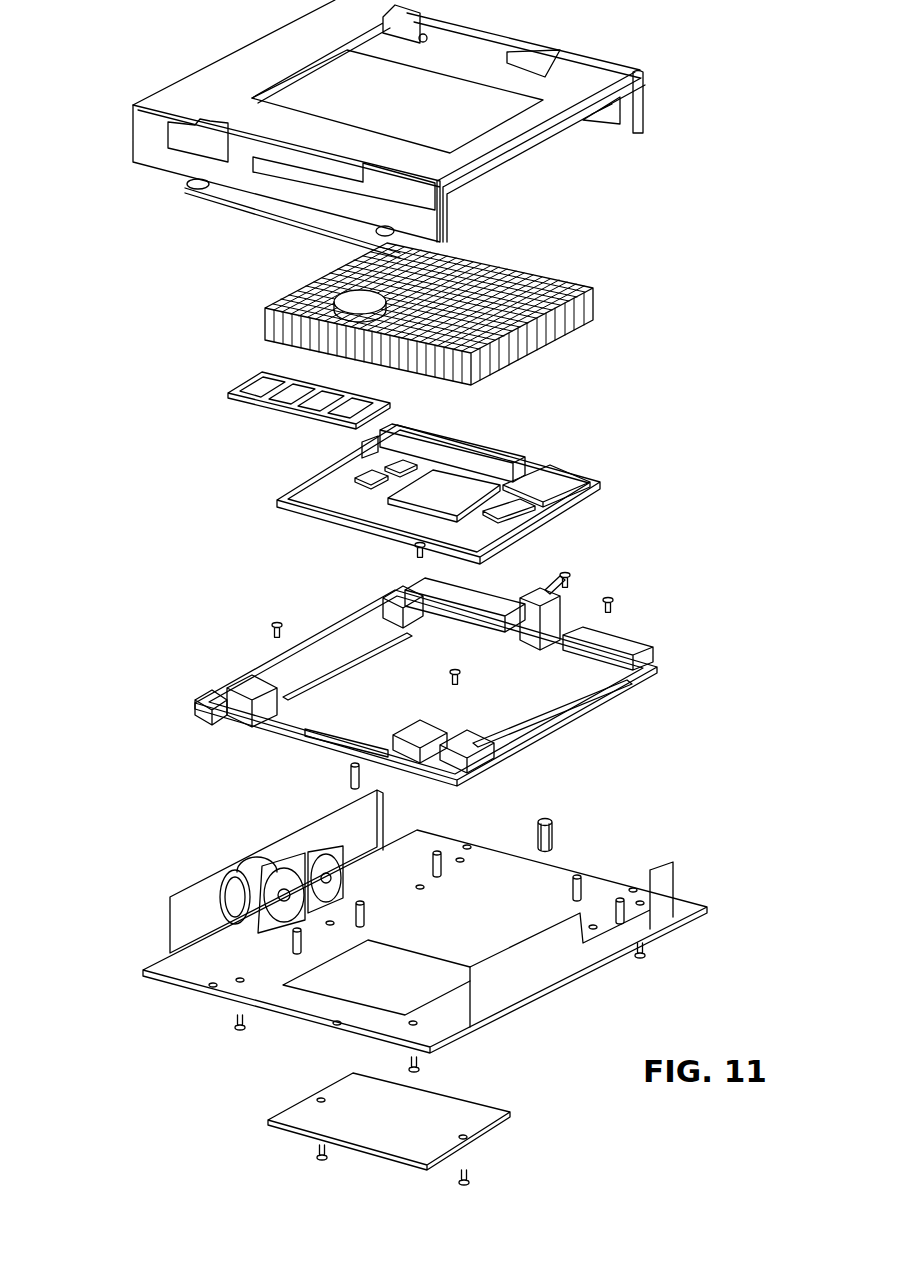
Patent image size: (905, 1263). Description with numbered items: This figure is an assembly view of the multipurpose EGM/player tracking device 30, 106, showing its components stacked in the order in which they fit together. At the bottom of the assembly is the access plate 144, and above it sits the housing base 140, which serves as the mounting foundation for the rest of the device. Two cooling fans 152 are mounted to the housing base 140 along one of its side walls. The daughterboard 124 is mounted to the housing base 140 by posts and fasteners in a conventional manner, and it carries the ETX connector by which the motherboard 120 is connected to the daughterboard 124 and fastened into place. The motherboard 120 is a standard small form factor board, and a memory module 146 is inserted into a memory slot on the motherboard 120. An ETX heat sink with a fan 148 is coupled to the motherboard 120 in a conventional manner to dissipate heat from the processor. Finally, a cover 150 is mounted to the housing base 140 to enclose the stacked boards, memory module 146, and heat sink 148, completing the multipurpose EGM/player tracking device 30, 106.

The multipurpose EGM/player tracking device 30 is at (135, 1172).
The multipurpose EGM/player tracking device 106 is at (135, 1172).
The cover 150 is at (648, 98).
The ETX heat sink with a fan 148 is at (533, 357).
The memory module 146 is at (260, 387).
The motherboard 120 is at (600, 483).
The daughterboard 124 is at (573, 720).
The housing base 140 is at (675, 917).
The cooling fans 152 is at (225, 898).
The access plate 144 is at (512, 1112).